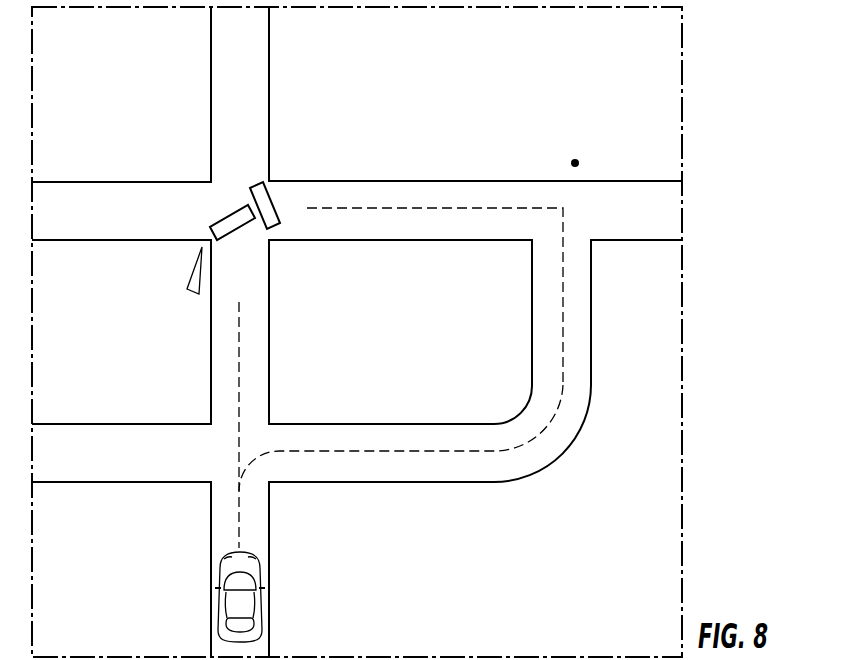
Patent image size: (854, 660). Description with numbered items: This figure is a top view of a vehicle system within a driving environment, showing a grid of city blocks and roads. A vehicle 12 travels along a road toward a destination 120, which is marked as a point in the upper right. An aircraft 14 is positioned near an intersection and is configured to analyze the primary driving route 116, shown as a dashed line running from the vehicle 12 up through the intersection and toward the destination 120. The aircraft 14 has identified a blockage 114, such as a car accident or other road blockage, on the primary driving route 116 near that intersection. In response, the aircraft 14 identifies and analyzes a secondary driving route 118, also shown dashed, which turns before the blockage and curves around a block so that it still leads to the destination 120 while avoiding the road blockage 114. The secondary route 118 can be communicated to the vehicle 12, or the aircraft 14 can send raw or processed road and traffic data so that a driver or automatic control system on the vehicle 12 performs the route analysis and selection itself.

The vehicle 12 is at (269, 597).
The aircraft 14 is at (190, 275).
The blockage 114 is at (197, 167).
The primary driving route 116 is at (327, 209).
The secondary driving route 118 is at (392, 452).
The destination 120 is at (577, 160).